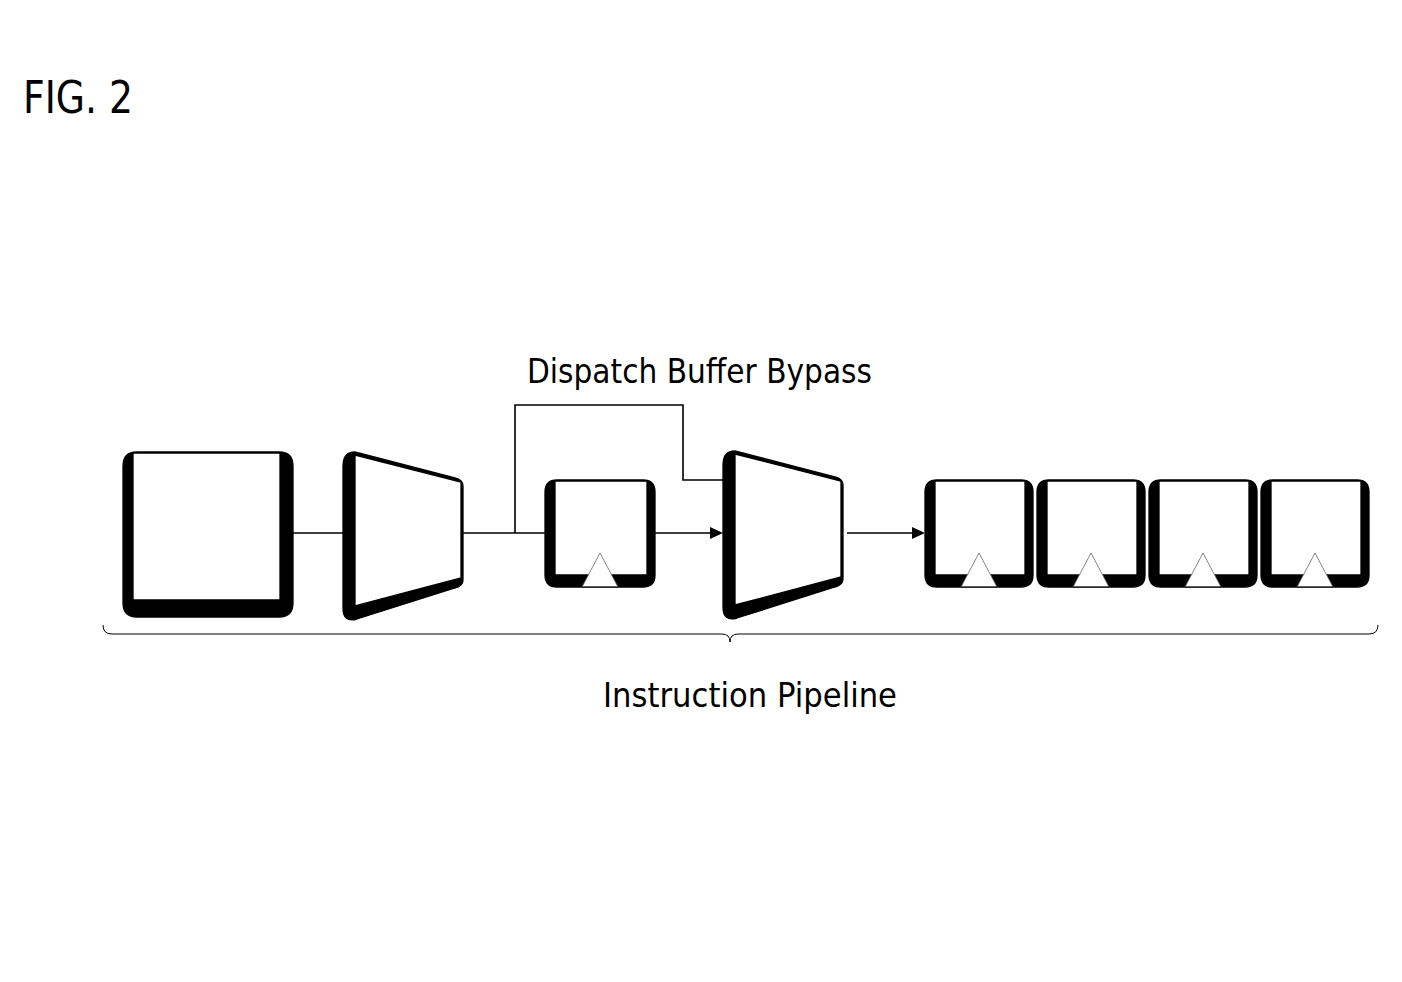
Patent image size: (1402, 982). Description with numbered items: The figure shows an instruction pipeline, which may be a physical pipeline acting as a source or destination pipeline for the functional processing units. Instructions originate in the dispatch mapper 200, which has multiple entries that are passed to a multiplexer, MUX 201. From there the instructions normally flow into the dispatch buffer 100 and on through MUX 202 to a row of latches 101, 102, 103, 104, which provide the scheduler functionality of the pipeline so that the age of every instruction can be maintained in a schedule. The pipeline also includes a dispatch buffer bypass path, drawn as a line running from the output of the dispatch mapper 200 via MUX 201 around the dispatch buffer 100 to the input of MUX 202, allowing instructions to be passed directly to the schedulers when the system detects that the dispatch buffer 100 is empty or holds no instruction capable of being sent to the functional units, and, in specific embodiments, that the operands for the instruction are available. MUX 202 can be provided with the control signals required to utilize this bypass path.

The dispatch mapper 200 is at (179, 547).
The MUX 201 is at (378, 547).
The dispatch buffer 100 is at (600, 533).
The MUX 202 is at (778, 519).
The latch 101 is at (979, 533).
The latch 102 is at (1091, 533).
The latch 103 is at (1203, 533).
The latch 104 is at (1315, 533).